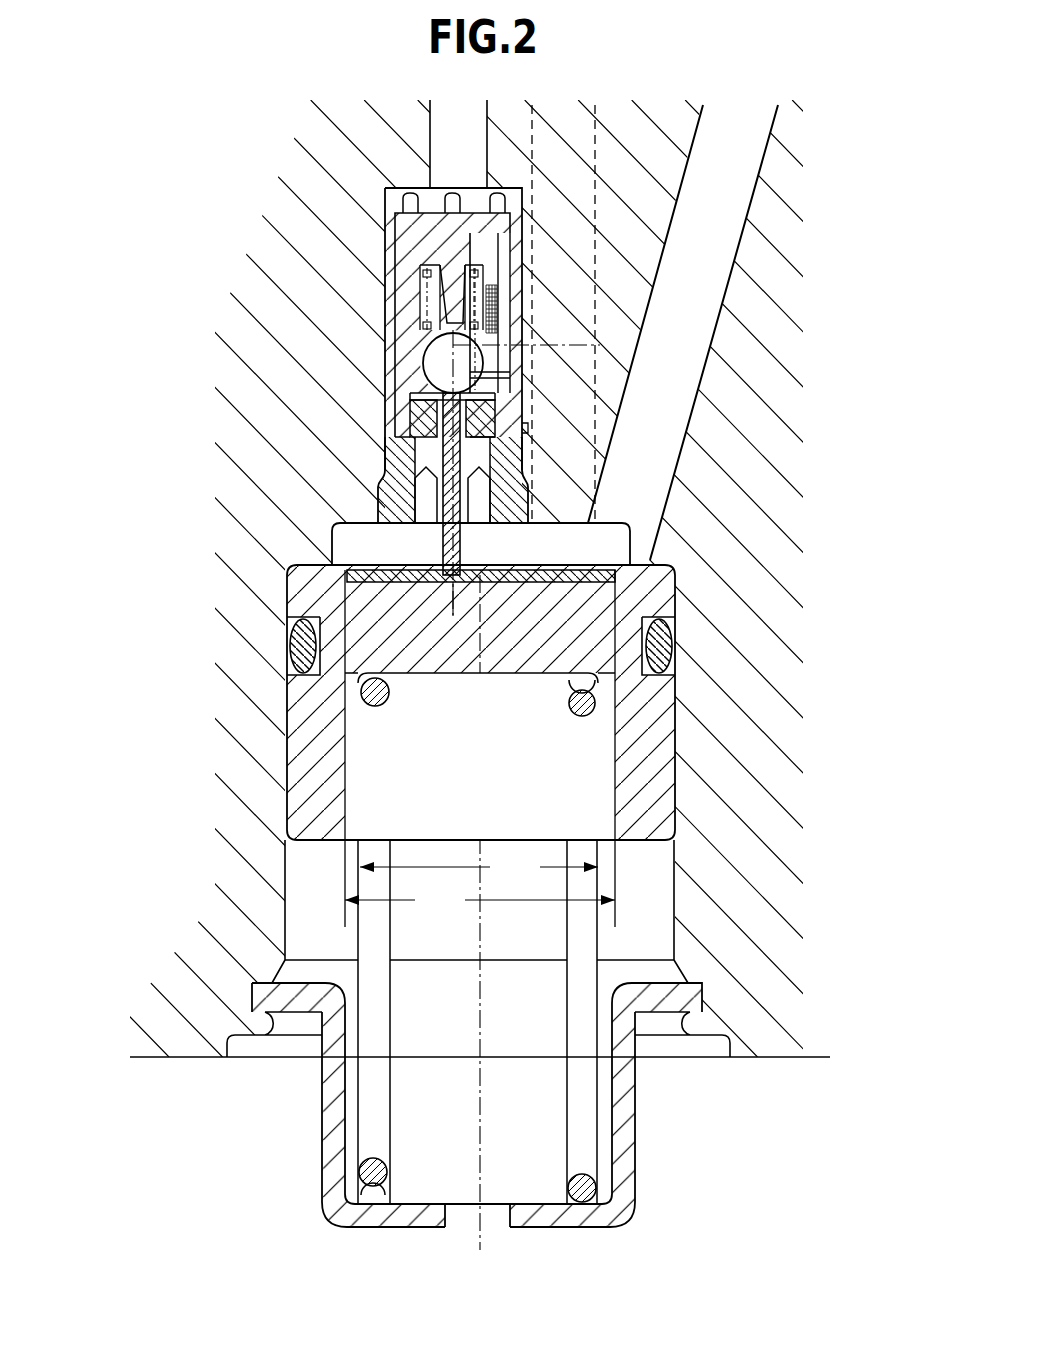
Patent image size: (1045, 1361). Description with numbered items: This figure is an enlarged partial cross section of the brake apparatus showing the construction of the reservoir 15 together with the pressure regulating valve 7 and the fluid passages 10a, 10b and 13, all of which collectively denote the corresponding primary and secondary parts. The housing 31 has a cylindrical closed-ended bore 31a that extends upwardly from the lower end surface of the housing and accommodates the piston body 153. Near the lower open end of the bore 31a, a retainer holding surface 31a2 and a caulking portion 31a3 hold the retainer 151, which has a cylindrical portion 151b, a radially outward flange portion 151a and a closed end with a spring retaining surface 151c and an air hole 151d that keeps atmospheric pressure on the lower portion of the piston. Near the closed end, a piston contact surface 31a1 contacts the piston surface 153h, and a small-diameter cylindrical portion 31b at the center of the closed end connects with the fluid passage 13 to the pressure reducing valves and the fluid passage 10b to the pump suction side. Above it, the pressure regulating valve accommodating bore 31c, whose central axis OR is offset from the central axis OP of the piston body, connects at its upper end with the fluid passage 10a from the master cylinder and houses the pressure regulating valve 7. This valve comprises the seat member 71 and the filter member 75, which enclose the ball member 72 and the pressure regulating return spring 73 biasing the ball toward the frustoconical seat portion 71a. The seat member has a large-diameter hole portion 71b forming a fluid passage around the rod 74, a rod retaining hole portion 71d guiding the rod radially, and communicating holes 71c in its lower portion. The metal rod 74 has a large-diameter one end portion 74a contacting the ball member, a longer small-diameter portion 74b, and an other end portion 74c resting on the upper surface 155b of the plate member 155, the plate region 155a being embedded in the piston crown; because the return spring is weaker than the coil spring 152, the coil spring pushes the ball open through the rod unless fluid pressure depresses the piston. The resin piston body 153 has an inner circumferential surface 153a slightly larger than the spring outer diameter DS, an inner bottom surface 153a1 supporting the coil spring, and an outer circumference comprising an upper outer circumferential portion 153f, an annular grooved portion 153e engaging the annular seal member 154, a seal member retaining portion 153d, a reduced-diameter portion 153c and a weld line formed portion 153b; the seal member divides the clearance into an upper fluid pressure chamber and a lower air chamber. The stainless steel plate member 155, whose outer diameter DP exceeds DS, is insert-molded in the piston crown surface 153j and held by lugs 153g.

The pressure regulating valve 7 is at (378, 429).
The fluid passage 10a is at (428, 135).
The fluid passage 10b is at (720, 303).
The fluid passage 13 is at (595, 146).
The reservoir 15 is at (272, 782).
The housing 31 is at (745, 890).
The cylindrical closed-ended bore 31a is at (284, 872).
The piston contact surface 31a1 is at (335, 563).
The retainer holding surface 31a2 is at (262, 1052).
The caulking portion 31a3 is at (252, 1038).
The small-diameter cylindrical portion 31b is at (380, 510).
The pressure regulating valve accommodating bore 31c is at (386, 228).
The seat member 71 is at (524, 455).
The frustoconical seat portion 71a is at (495, 381).
The large-diameter hole portion 71b is at (530, 470).
The communicating holes 71c is at (500, 527).
The rod retaining hole portion 71d is at (462, 530).
The ball member 72 is at (418, 282).
The pressure regulating return spring 73 is at (418, 280).
The rod 74 is at (386, 433).
The one end portion 74a is at (436, 352).
The small-diameter portion 74b is at (436, 437).
The other end portion 74c is at (448, 590).
The filter member 75 is at (497, 226).
The retainer 151 is at (636, 1085).
The flange portion 151a is at (683, 1000).
The cylindrical portion 151b is at (640, 1130).
The spring retaining surface 151c is at (540, 1212).
The air hole 151d is at (455, 1226).
The coil spring 152 is at (598, 1188).
The piston body 153 is at (676, 718).
The inner circumferential surface 153a is at (356, 795).
The inner bottom surface 153a1 is at (376, 712).
The weld line formed portion 153b is at (677, 812).
The reduced-diameter portion 153c is at (683, 750).
The seal member retaining portion 153d is at (290, 712).
The annular grooved portion 153e is at (300, 700).
The upper outer circumferential portion 153f is at (298, 625).
The lugs 153g is at (400, 574).
The piston surface 153h is at (655, 583).
The piston crown surface 153j is at (622, 571).
The annular seal member 154 is at (670, 648).
The plate member 155 is at (497, 584).
The seal plate 155a is at (450, 585).
The upper surface 155b is at (420, 474).
The central axis OR is at (466, 356).
The central axis OP is at (478, 1062).
The outer diameter DS is at (479, 868).
The outer diameter DP is at (480, 901).